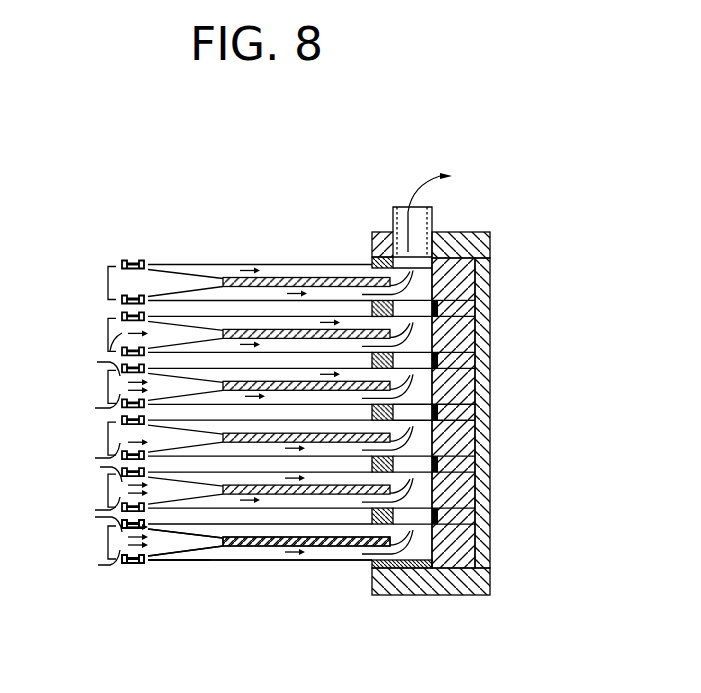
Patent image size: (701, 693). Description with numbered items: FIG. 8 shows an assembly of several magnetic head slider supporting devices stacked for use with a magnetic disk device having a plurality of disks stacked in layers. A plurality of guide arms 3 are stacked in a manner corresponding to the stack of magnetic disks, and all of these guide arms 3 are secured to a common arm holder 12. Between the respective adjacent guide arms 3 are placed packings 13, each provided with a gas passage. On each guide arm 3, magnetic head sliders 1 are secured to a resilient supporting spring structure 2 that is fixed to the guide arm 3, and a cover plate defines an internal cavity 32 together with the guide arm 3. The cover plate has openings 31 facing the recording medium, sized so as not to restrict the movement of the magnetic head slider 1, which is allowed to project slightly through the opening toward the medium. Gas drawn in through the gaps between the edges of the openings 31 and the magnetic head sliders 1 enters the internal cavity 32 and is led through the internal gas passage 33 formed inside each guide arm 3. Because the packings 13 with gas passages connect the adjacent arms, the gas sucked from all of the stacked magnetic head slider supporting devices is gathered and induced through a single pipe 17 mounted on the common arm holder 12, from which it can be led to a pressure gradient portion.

The magnetic head slider 1 is at (128, 568).
The resilient supporting spring structure 2 is at (183, 553).
The guide arm 3 is at (300, 560).
The common arm holder 12 is at (468, 583).
The packing with gas passage 13 is at (373, 515).
The single pipe 17 is at (435, 211).
The opening 31 is at (116, 565).
The internal cavity 32 is at (158, 562).
The internal gas passage 33 is at (273, 553).